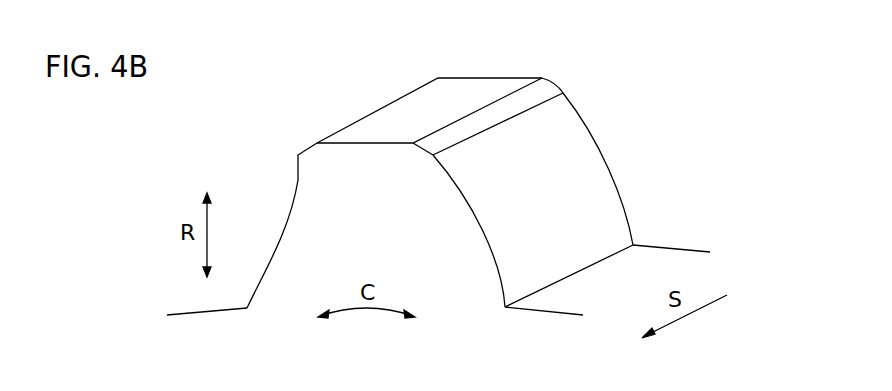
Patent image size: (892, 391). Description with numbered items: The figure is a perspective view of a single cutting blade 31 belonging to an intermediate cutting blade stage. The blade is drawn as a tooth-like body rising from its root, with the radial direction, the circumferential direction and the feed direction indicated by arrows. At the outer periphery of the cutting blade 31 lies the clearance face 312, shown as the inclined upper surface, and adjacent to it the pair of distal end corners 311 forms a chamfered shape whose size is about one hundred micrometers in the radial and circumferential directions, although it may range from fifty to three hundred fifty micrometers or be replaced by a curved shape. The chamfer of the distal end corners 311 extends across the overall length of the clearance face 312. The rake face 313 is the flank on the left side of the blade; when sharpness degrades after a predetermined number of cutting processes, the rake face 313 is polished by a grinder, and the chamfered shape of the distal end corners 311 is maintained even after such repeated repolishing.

The cutting blade 31 is at (428, 161).
The distal end corner 311 is at (497, 118).
The clearance face 312 is at (407, 120).
The rake face 313 is at (310, 232).